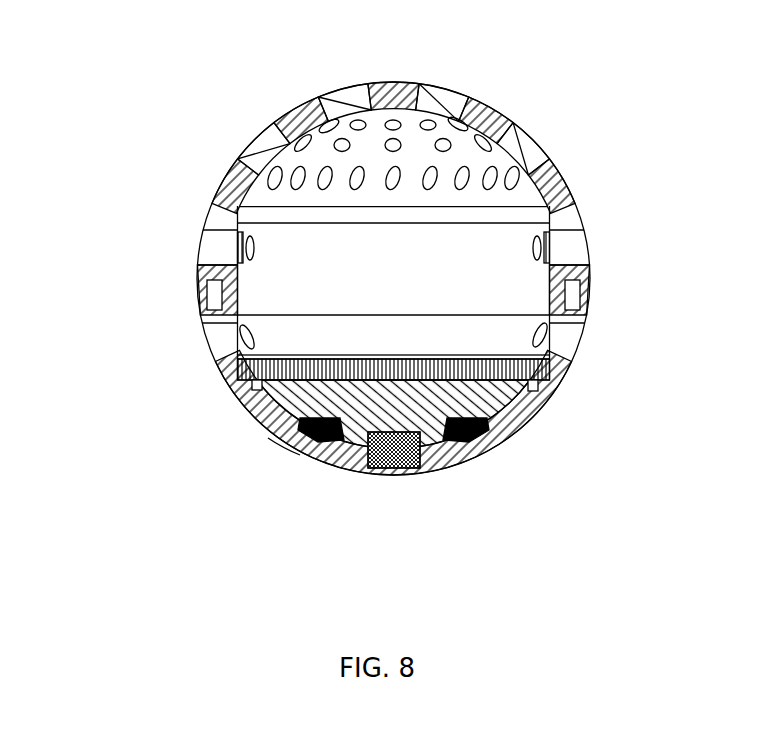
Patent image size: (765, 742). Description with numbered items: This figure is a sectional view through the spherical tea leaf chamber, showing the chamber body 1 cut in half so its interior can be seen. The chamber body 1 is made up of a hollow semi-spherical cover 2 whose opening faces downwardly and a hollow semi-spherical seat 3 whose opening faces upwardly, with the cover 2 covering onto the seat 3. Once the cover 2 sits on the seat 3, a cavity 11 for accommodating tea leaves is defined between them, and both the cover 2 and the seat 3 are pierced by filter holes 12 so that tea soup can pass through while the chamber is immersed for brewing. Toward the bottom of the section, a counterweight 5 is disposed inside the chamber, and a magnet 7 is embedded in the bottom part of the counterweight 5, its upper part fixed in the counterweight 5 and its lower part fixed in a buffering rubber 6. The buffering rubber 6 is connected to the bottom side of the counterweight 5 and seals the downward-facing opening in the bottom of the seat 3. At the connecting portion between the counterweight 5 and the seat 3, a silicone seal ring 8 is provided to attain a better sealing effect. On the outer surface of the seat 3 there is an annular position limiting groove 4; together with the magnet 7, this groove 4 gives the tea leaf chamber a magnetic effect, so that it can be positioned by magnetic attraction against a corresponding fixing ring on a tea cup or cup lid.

The chamber body 1 is at (335, 278).
The cover 2 is at (230, 212).
The seat 3 is at (262, 410).
The annular position limiting groove 4 is at (297, 443).
The counterweight 5 is at (333, 462).
The buffering rubber 6 is at (357, 470).
The magnet 7 is at (403, 448).
The silicone seal ring 8 is at (533, 388).
The cavity 11 is at (490, 262).
The filter holes 12 is at (288, 132).